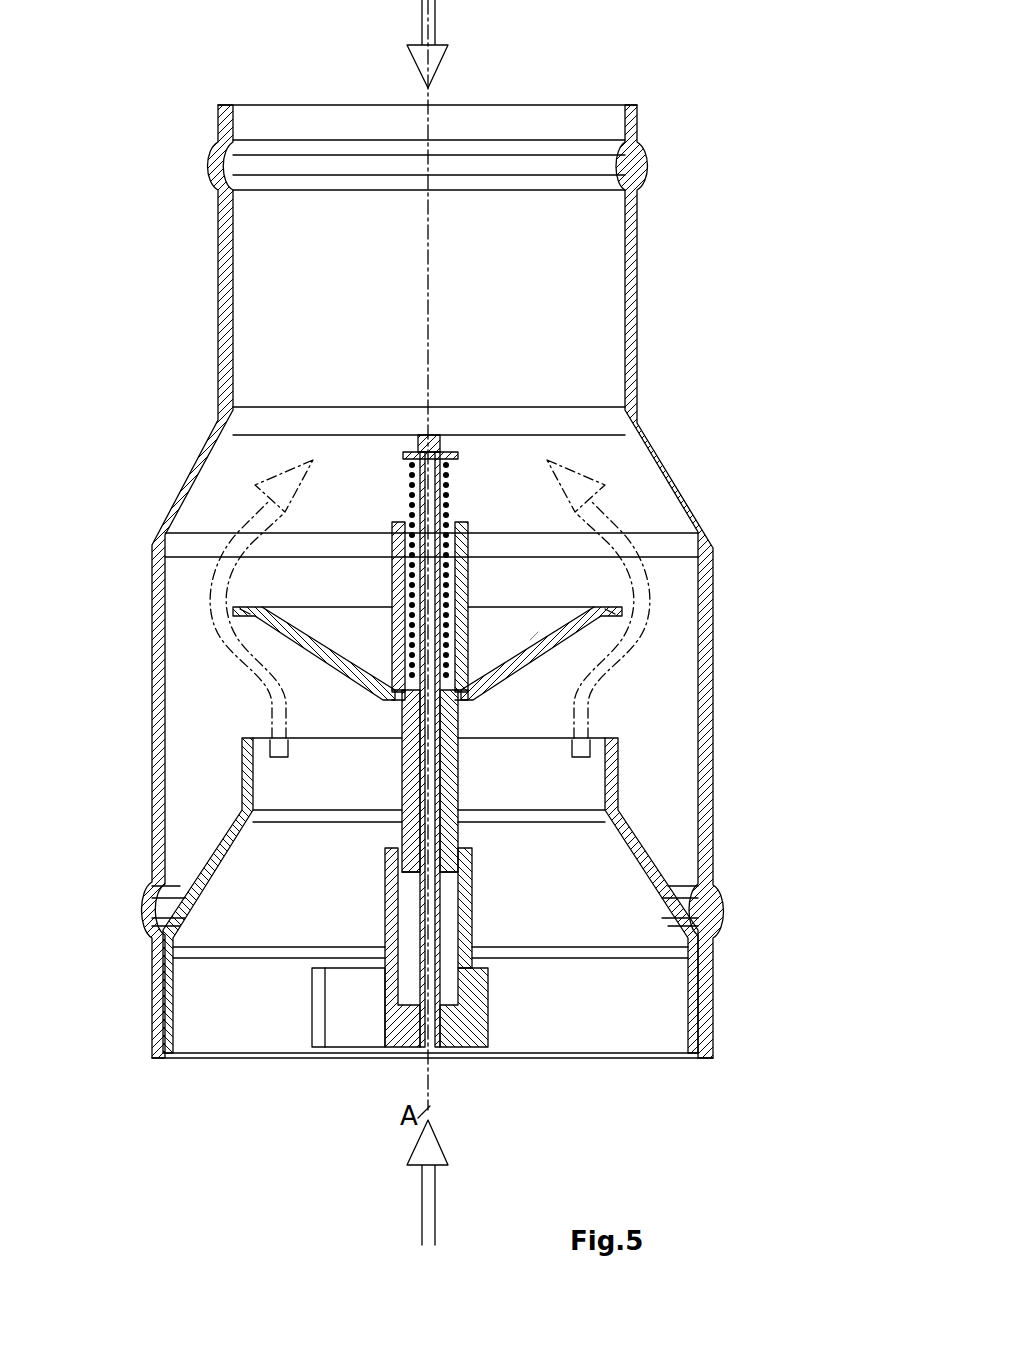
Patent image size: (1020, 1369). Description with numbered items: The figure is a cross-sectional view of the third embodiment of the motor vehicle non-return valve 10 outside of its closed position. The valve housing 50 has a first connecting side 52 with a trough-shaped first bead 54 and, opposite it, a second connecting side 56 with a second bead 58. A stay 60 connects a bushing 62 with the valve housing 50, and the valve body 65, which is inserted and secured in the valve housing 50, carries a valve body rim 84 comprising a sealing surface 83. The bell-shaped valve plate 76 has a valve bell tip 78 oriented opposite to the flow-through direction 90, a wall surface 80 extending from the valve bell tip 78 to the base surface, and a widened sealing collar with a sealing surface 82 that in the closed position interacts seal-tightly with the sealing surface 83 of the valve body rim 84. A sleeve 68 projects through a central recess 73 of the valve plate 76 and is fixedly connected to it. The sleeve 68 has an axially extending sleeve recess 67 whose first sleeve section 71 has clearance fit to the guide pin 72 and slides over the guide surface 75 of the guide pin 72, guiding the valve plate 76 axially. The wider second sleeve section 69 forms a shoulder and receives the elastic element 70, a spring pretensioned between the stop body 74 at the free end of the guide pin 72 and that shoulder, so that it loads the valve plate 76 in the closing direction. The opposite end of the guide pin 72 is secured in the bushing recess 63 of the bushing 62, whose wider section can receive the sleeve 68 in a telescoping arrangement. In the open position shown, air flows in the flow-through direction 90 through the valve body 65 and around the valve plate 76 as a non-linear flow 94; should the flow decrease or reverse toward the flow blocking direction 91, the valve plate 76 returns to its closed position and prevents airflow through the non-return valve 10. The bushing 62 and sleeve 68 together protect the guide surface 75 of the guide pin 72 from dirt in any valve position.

The motor vehicle non-return valve 10 is at (172, 224).
The valve housing 50 is at (713, 608).
The first connecting side 52 is at (150, 1020).
The first bead 54 is at (142, 925).
The second connecting side 56 is at (640, 118).
The second bead 58 is at (650, 178).
The stay 60 is at (355, 1040).
The bushing 62 is at (392, 905).
The bushing recess 63 is at (465, 985).
The valve body 65 is at (713, 822).
The sleeve recess 67 is at (398, 520).
The sleeve 68 is at (468, 527).
The second sleeve section 69 is at (395, 582).
The elastic element 70 is at (452, 485).
The first sleeve section 71 is at (450, 800).
The guide pin 72 is at (432, 915).
The central recess 73 is at (460, 702).
The stop body 74 is at (440, 450).
The guide surface 75 is at (445, 890).
The valve plate 76 is at (522, 640).
The valve bell tip 78 is at (398, 703).
The wall surface 80 is at (335, 655).
The sealing surface of the valve plate 82 is at (300, 622).
The sealing surface of the valve body 83 is at (243, 733).
The valve body rim 84 is at (240, 745).
The flow-through direction 90 is at (425, 1190).
The flow blocking direction 91 is at (440, 10).
The non-linear flow 94 is at (205, 580).